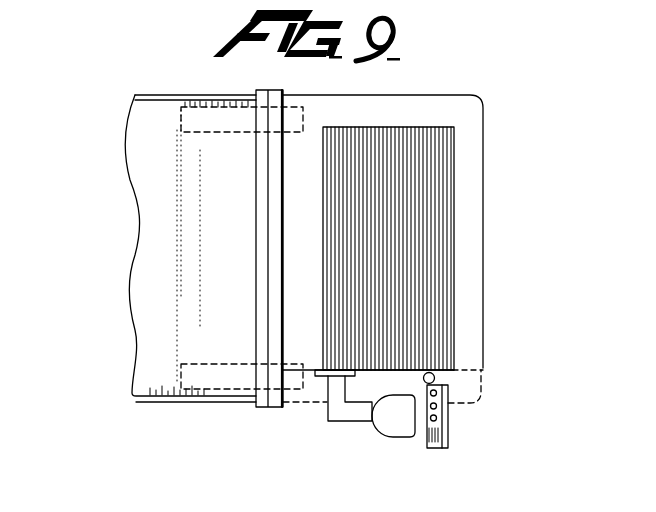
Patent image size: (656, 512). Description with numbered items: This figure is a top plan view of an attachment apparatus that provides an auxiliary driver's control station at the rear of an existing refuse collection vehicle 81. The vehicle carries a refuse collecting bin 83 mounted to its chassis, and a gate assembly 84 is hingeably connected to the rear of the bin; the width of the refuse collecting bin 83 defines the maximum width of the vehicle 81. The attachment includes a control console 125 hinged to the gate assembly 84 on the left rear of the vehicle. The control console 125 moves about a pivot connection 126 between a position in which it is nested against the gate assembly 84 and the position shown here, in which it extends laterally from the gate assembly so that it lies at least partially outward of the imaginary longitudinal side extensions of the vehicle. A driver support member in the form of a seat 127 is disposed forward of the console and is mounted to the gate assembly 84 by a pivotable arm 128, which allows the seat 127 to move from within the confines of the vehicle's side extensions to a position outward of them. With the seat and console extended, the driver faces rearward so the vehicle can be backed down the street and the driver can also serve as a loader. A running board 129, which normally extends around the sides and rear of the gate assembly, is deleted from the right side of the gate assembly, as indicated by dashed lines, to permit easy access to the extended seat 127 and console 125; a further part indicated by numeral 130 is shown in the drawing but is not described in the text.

The refuse collection vehicle 81 is at (164, 75).
The refuse collecting bin 83 is at (150, 274).
The gate assembly 84 is at (432, 193).
The control console 125 is at (462, 424).
The pivot connection 126 is at (434, 374).
The seat 127 is at (393, 427).
The pivotable arm 128 is at (347, 421).
The running board 129 is at (473, 129).
The electrical lead 130 is at (488, 392).